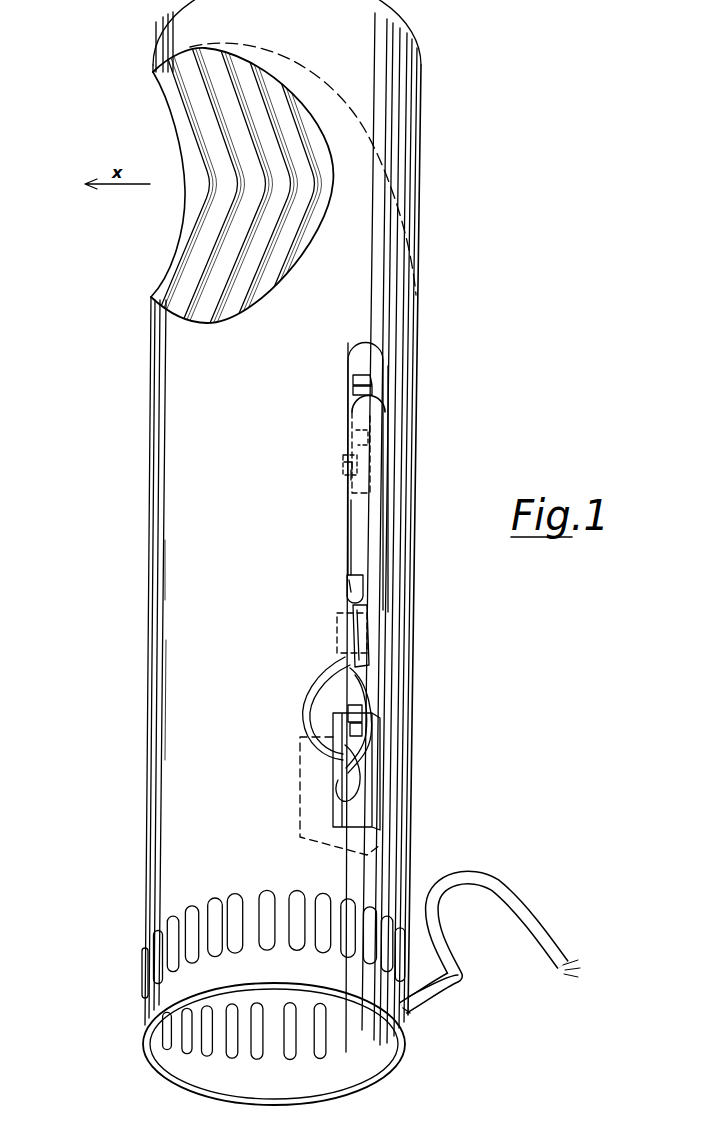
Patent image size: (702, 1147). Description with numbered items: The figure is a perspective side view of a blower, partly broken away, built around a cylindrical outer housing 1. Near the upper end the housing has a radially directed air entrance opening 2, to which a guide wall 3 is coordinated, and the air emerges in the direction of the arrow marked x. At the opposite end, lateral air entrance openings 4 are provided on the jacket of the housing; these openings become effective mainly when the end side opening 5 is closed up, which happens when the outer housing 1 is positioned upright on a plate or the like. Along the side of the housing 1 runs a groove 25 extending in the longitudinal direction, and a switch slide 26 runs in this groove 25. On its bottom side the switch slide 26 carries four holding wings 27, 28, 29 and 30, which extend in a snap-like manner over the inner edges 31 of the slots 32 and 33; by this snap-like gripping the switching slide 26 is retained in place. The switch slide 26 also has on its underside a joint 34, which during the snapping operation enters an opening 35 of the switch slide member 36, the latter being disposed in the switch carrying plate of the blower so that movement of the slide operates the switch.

The cylindrical outer housing 1 is at (178, 518).
The radially directed air entrance opening 2 is at (240, 213).
The guide wall 3 is at (363, 127).
The lateral air entrance openings 4 is at (175, 946).
The end side opening 5 is at (222, 1073).
The groove 25 is at (367, 353).
The switch slide 26 is at (375, 553).
The holding wing 27 is at (387, 430).
The holding wing 28 is at (355, 466).
The holding wing 29 is at (369, 663).
The holding wing 30 is at (370, 692).
The inner edges 31 is at (374, 388).
The slot 32 is at (372, 381).
The slot 33 is at (361, 600).
The joint 34 is at (355, 718).
The opening 35 is at (352, 732).
The switch slide member 36 is at (345, 742).